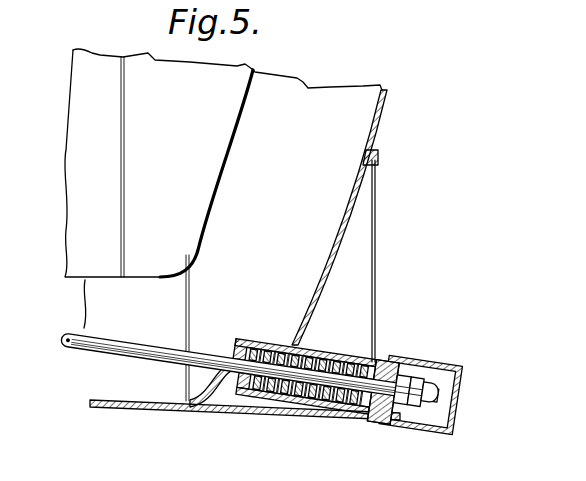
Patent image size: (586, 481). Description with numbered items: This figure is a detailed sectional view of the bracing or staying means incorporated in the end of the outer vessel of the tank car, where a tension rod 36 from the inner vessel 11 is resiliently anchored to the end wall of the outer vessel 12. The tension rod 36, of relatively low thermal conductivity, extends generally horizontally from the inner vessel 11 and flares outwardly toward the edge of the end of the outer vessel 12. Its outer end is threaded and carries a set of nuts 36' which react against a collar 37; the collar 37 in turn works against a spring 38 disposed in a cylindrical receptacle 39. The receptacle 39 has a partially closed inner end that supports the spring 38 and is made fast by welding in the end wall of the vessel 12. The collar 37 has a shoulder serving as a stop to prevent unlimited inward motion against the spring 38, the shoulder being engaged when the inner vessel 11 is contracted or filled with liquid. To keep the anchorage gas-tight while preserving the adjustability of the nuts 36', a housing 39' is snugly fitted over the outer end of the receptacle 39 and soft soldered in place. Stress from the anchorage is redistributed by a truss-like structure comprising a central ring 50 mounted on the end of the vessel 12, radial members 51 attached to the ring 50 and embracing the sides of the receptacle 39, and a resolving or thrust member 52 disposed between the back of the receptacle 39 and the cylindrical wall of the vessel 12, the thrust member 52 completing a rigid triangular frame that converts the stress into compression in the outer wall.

The inner vessel 11 is at (222, 188).
The outer vessel 12 is at (350, 222).
The tension rod 36 is at (250, 356).
The nuts 36' is at (415, 419).
The collar 37 is at (394, 368).
The spring 38 is at (343, 358).
The cylindrical receptacle 39 is at (302, 363).
The housing 39' is at (437, 394).
The central ring 50 is at (380, 158).
The radial member 51 is at (377, 258).
The thrust member 52 is at (262, 410).